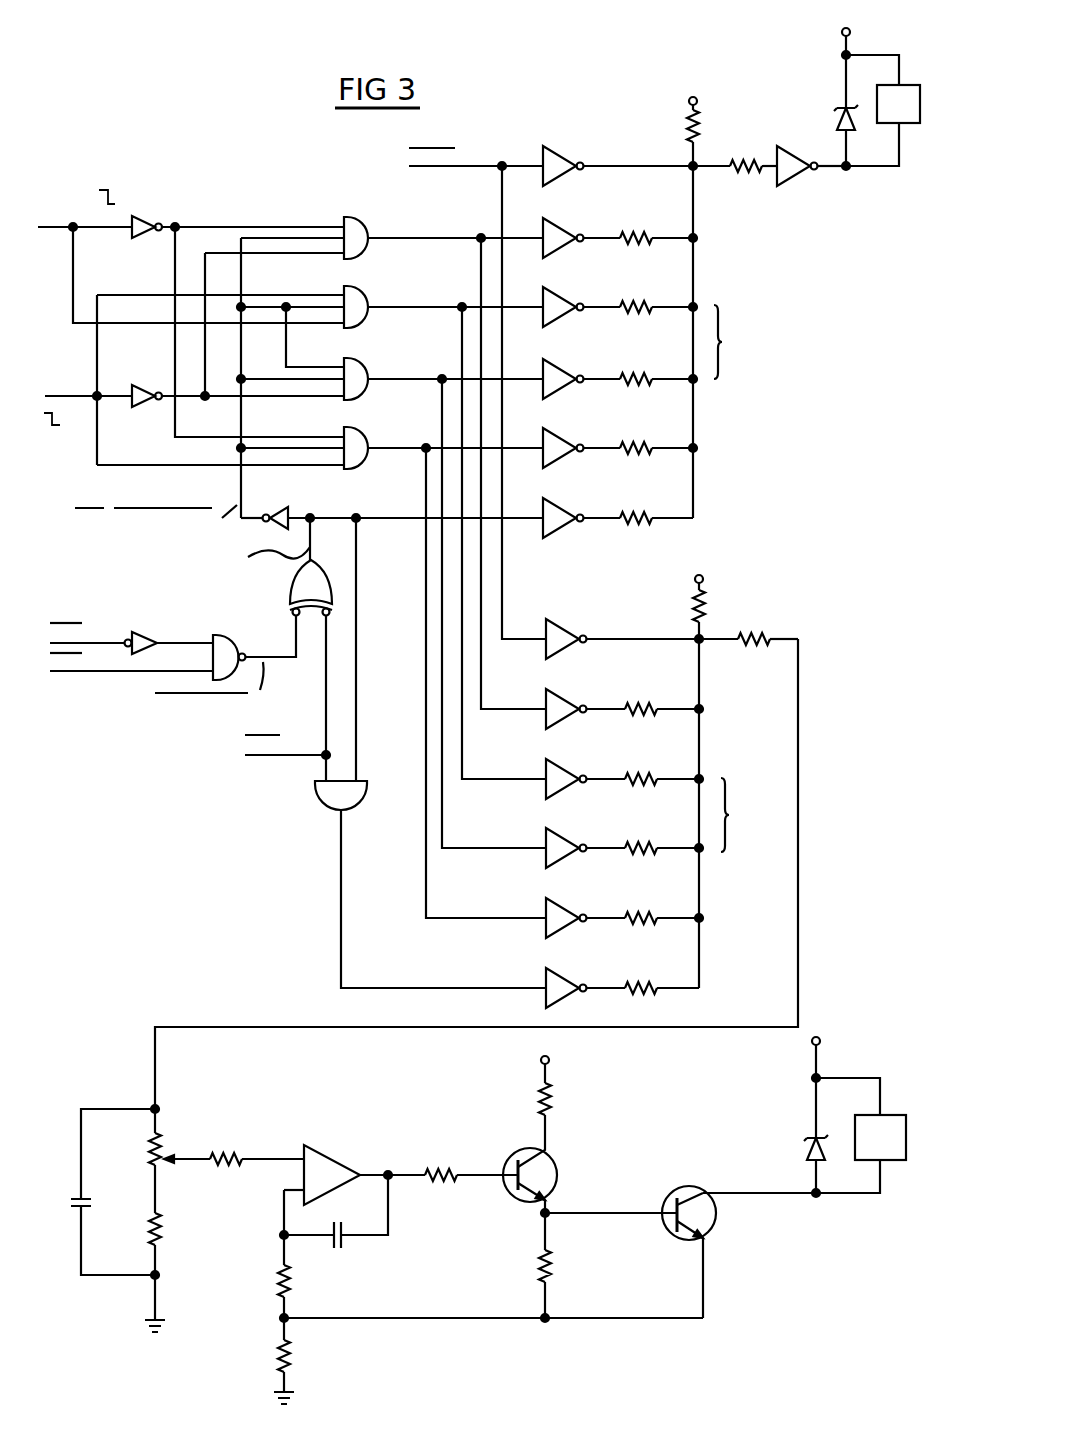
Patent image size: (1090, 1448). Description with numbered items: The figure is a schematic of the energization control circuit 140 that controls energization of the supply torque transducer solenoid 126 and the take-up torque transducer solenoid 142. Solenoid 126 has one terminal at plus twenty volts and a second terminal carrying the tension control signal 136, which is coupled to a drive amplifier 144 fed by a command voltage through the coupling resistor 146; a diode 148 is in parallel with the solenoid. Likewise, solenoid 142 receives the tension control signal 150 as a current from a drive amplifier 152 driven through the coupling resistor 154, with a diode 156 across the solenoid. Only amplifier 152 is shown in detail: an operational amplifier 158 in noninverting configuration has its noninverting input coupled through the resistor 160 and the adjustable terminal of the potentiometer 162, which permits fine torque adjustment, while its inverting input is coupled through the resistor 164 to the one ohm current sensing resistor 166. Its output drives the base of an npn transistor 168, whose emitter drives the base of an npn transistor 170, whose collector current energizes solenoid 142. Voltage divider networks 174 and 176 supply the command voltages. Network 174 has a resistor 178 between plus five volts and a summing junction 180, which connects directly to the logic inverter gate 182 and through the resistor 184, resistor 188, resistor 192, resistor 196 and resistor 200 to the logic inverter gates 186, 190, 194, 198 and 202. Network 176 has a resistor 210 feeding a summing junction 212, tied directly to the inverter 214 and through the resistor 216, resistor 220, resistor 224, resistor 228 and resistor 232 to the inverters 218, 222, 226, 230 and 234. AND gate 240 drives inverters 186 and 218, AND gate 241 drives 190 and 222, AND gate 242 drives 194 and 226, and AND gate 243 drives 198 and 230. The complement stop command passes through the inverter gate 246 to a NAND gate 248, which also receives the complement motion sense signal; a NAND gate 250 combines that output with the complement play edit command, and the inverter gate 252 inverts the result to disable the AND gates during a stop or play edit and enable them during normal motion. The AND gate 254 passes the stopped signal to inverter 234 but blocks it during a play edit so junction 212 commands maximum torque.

The supply torque transducer solenoid 126 is at (908, 82).
The tension control signal 136 is at (825, 168).
The energization control circuit 140 is at (243, 164).
The take-up torque transducer solenoid 142 is at (898, 1113).
The drive amplifier 144 is at (777, 185).
The coupling resistor 146 is at (748, 174).
The diode 148 is at (838, 120).
The tension control signal 150 is at (868, 1195).
The drive amplifier 152 is at (737, 1325).
The coupling resistor 154 is at (755, 647).
The diode 156 is at (808, 1151).
The operational amplifier 158 is at (335, 1160).
The resistor 160 is at (238, 1148).
The potentiometer 162 is at (163, 1147).
The resistor 164 is at (278, 1288).
The current sensing resistor 166 is at (280, 1362).
The npn transistor 168 is at (507, 1162).
The npn transistor 170 is at (681, 1191).
The voltage divider network 174 is at (628, 93).
The voltage divider network 176 is at (617, 590).
The resistor 178 is at (687, 126).
The summing junction 180 is at (696, 273).
The logic inverter gate 182 is at (563, 137).
The resistor 184 is at (660, 230).
The logic inverter gate 186 is at (563, 226).
The resistor 188 is at (660, 300).
The logic inverter gate 190 is at (565, 299).
The resistor 192 is at (660, 370).
The logic inverter gate 194 is at (565, 370).
The resistor 196 is at (660, 440).
The logic inverter gate 198 is at (565, 440).
The resistor 200 is at (648, 530).
The logic inverter gate 202 is at (565, 510).
The resistor 210 is at (690, 609).
The summing junction 212 is at (701, 736).
The logic inverter 214 is at (567, 617).
The resistor 216 is at (662, 707).
The inverter 218 is at (560, 700).
The resistor 220 is at (662, 777).
The inverter 222 is at (562, 768).
The resistor 224 is at (662, 845).
The inverter 226 is at (563, 840).
The resistor 228 is at (662, 911).
The inverter 230 is at (563, 908).
The resistor 232 is at (658, 970).
The inverter 234 is at (568, 982).
The AND gate 240 is at (359, 229).
The AND gate 241 is at (360, 301).
The AND gate 242 is at (360, 372).
The AND gate 243 is at (360, 441).
The inverter gate 246 is at (148, 622).
The NAND gate 248 is at (228, 624).
The NAND gate 250 is at (293, 590).
The inverter gate 252 is at (281, 510).
The AND gate 254 is at (325, 797).